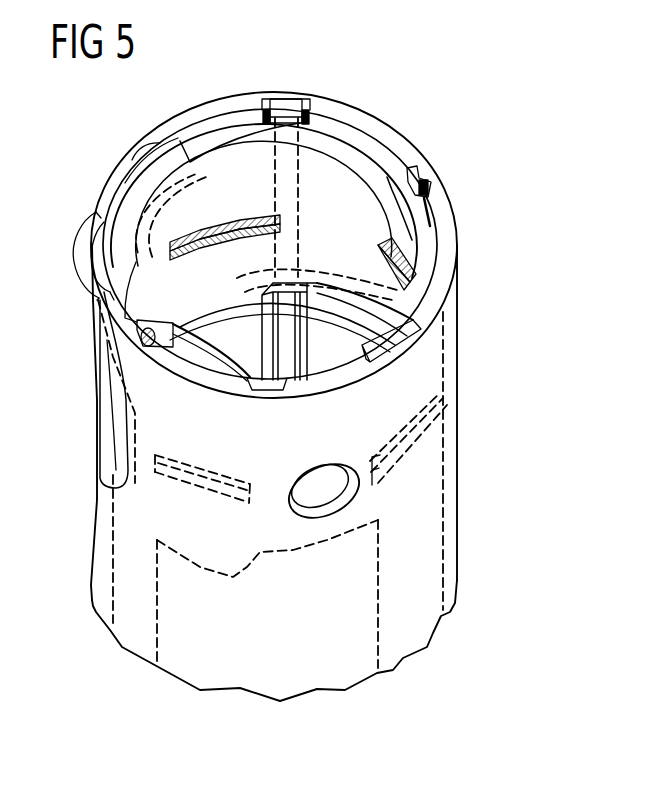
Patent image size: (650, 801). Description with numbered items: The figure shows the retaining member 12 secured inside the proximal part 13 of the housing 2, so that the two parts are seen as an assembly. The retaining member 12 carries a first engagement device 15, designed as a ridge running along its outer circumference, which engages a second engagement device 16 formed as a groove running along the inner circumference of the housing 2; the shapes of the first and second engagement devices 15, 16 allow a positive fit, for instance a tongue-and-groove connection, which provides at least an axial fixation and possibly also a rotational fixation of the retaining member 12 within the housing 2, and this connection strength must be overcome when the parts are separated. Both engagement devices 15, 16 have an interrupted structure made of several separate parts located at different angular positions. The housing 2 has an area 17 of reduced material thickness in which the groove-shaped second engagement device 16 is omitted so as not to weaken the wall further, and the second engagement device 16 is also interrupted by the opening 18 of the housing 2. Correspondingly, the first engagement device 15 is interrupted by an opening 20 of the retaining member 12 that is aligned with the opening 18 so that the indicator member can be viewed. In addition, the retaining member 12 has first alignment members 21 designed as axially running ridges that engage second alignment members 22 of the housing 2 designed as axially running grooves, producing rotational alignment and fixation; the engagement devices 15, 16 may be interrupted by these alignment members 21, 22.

The housing 2 is at (424, 369).
The retaining member 12 is at (335, 168).
The proximal part 13 is at (406, 119).
The first engagement device 15 is at (233, 222).
The second engagement device 16 is at (259, 220).
The area with reduced material thickness 17 is at (320, 485).
The opening 18 is at (115, 418).
The opening 20 is at (113, 390).
The first alignment member 21 is at (293, 115).
The second alignment member 22 is at (281, 99).